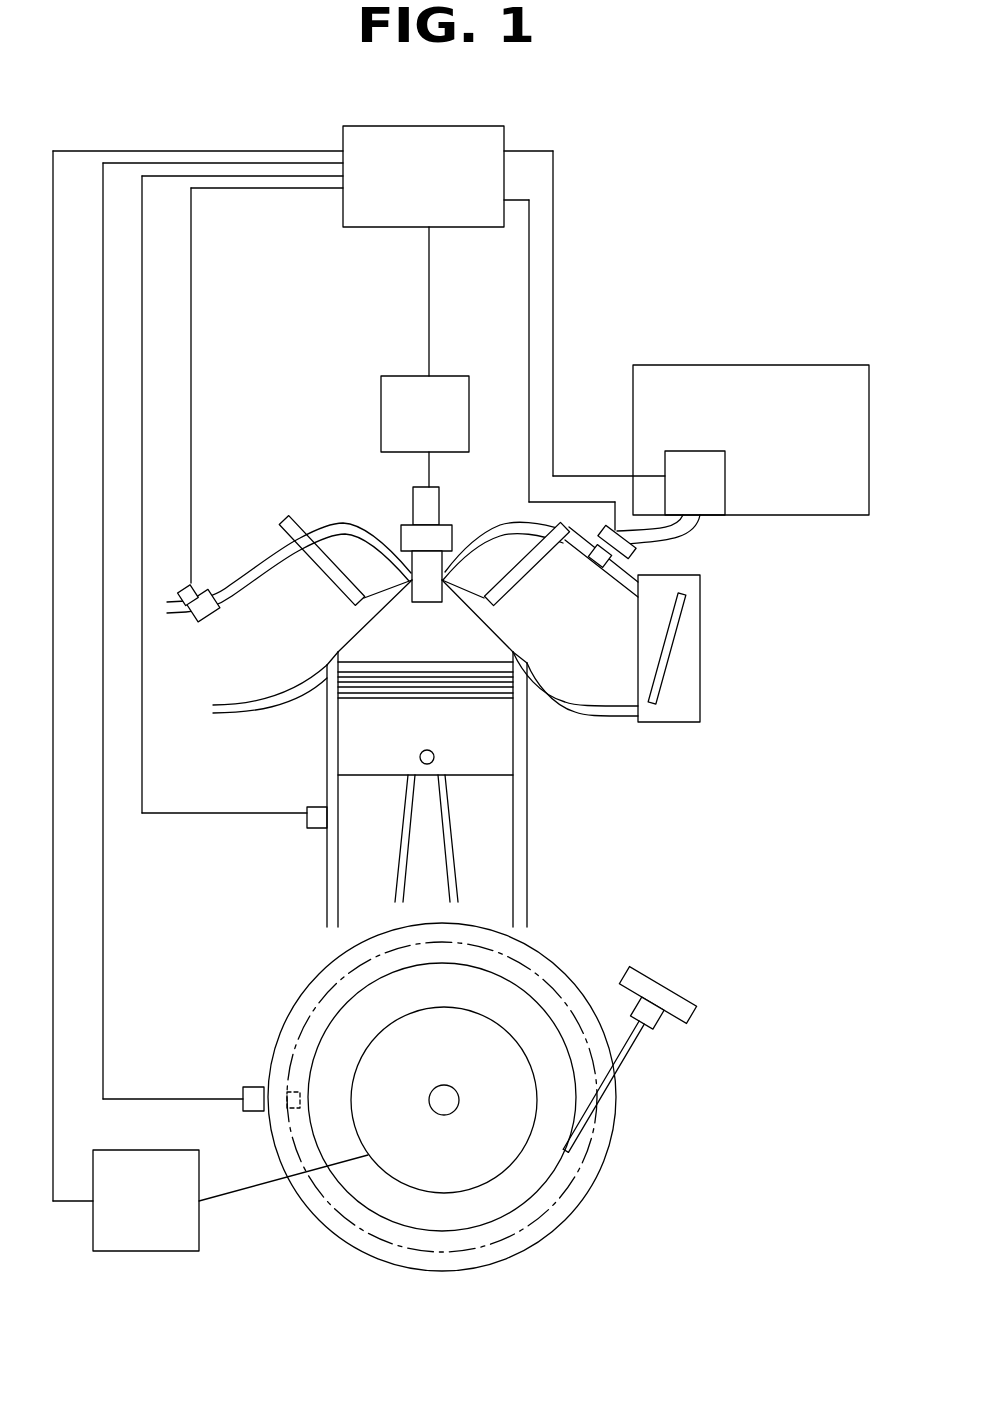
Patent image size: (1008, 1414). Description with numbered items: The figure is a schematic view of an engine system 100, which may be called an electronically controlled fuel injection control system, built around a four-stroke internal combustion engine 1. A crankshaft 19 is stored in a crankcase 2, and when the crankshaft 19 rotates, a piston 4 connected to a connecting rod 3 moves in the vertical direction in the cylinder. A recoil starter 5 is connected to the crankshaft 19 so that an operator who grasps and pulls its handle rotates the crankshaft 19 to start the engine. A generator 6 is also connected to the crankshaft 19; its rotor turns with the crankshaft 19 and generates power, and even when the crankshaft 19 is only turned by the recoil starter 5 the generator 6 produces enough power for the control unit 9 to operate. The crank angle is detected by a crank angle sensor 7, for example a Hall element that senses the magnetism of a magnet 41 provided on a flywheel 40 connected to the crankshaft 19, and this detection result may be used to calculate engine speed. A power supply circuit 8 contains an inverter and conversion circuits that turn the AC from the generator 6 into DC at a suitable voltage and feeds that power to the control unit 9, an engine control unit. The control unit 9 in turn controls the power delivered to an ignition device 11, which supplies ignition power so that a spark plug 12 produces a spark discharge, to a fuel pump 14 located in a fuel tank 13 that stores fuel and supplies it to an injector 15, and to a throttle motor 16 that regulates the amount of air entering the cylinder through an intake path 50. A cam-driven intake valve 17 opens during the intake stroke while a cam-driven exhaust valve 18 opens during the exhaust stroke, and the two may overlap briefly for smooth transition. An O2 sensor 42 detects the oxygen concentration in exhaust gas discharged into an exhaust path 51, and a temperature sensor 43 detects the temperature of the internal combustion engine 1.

The engine system 100 is at (757, 100).
The internal combustion engine 1 is at (570, 830).
The crankcase 2 is at (327, 960).
The connecting rod 3 is at (418, 835).
The piston 4 is at (350, 733).
The recoil starter 5 is at (653, 973).
The generator 6 is at (478, 1155).
The crank angle sensor 7 is at (258, 1087).
The power supply circuit 8 is at (128, 1150).
The control unit 9 is at (487, 128).
The ignition device 11 is at (457, 378).
The spark plug 12 is at (405, 525).
The fuel tank 13 is at (815, 366).
The fuel pump 14 is at (695, 450).
The injector 15 is at (633, 552).
The throttle motor 16 is at (698, 635).
The intake valve 17 is at (527, 565).
The exhaust valve 18 is at (283, 518).
The crankshaft 19 is at (448, 1085).
The flywheel 40 is at (308, 1020).
The magnet 41 is at (292, 1117).
The O2 sensor 42 is at (186, 578).
The temperature sensor 43 is at (307, 806).
The intake path 50 is at (583, 637).
The exhaust path 51 is at (268, 630).